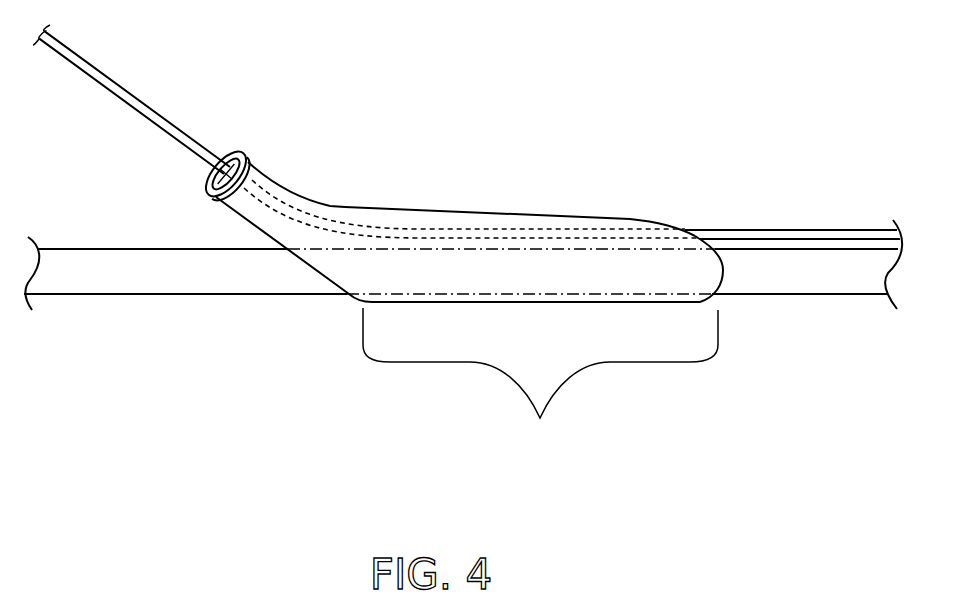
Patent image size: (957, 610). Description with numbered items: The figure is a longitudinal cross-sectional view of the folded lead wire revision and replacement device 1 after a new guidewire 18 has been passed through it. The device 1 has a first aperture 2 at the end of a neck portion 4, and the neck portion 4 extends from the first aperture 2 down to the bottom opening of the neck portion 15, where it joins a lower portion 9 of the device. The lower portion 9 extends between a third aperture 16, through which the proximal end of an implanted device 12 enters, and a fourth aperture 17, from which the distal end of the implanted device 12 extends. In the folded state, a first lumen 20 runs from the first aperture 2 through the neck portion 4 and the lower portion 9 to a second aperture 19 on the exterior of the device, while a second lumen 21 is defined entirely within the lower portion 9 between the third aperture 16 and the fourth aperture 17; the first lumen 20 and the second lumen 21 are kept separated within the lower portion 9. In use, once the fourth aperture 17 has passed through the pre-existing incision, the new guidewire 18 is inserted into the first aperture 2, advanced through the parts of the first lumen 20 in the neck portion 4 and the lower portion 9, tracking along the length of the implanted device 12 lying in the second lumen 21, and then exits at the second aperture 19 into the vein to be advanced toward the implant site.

The lead wire revision and replacement device 1 is at (466, 238).
The first aperture 2 is at (253, 163).
The neck portion 4 is at (278, 195).
The lower portion 9 is at (540, 380).
The implanted device 12 is at (219, 297).
The bottom opening of the neck portion 15 is at (288, 249).
The third aperture 16 is at (347, 280).
The fourth aperture 17 is at (713, 293).
The new guidewire 18 is at (147, 104).
The second aperture 19 is at (672, 221).
The first lumen 20 is at (577, 254).
The second lumen 21 is at (570, 280).